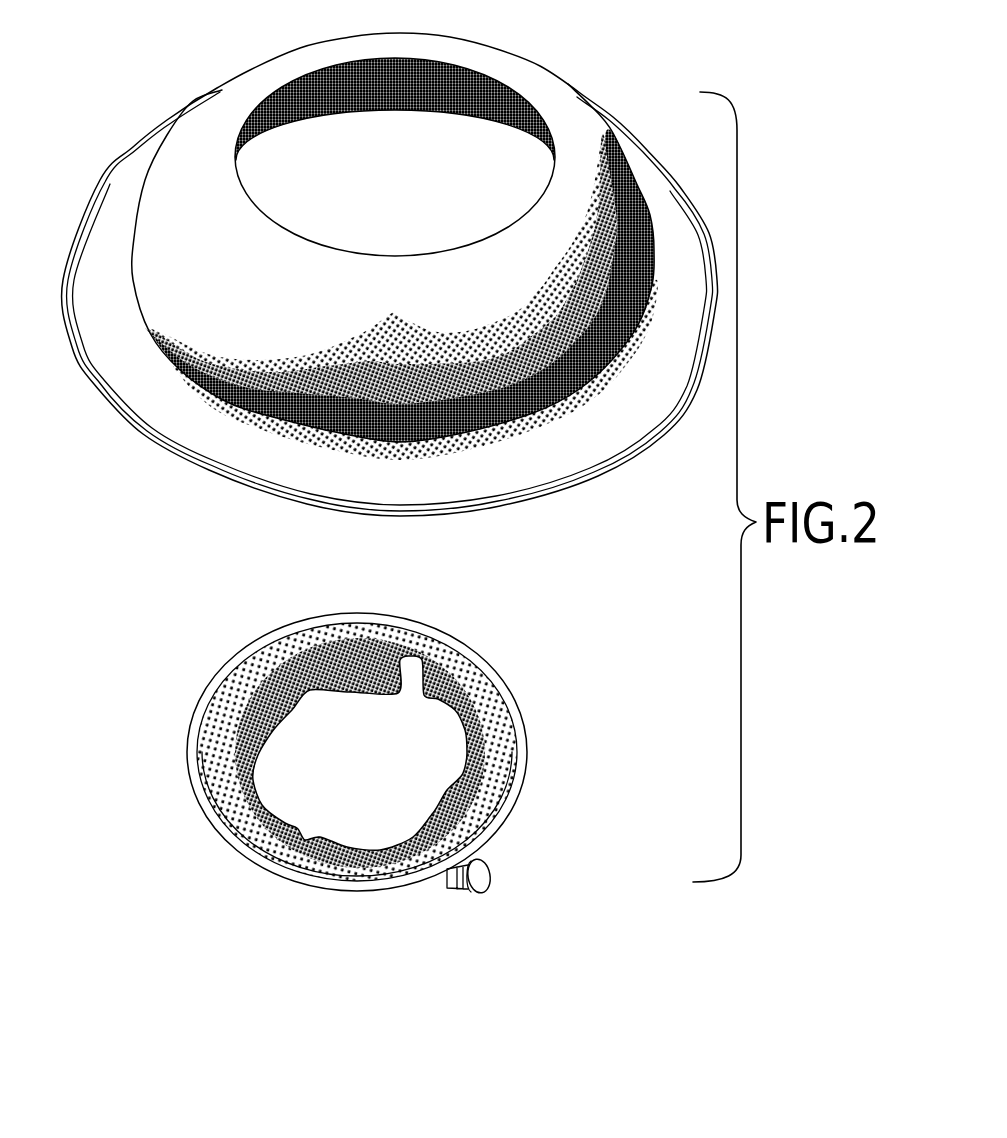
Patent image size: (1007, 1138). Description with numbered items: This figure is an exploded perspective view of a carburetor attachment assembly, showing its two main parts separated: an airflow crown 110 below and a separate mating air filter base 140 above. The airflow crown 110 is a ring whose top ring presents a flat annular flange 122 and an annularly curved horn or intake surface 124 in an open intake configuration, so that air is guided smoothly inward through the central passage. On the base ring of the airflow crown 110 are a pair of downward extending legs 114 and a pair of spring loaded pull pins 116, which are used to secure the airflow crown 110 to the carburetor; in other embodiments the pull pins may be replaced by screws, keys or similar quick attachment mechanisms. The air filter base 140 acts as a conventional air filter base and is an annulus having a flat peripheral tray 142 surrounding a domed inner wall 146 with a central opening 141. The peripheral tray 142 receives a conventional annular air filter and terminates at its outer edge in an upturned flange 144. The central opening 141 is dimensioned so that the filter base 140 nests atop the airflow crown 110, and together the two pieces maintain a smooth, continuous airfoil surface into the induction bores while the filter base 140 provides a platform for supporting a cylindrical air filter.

The airflow crown 110 is at (421, 747).
The downward extending legs 114 is at (443, 878).
The spring loaded pull pins 116 is at (485, 888).
The flat annular flange 122 is at (522, 733).
The annularly curved intake surface 124 is at (310, 673).
The air filter base 140 is at (381, 258).
The central opening 141 is at (338, 184).
The flat peripheral tray 142 is at (102, 257).
The upturned flange 144 is at (70, 340).
The domed inner wall 146 is at (175, 165).